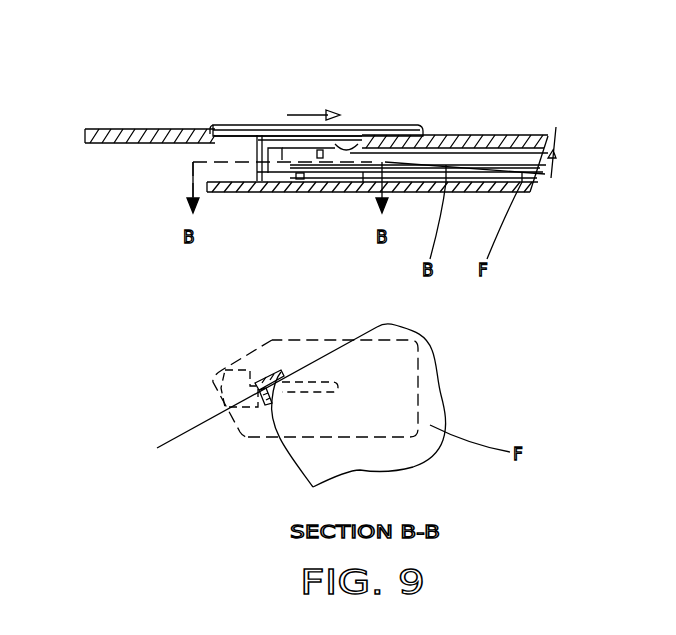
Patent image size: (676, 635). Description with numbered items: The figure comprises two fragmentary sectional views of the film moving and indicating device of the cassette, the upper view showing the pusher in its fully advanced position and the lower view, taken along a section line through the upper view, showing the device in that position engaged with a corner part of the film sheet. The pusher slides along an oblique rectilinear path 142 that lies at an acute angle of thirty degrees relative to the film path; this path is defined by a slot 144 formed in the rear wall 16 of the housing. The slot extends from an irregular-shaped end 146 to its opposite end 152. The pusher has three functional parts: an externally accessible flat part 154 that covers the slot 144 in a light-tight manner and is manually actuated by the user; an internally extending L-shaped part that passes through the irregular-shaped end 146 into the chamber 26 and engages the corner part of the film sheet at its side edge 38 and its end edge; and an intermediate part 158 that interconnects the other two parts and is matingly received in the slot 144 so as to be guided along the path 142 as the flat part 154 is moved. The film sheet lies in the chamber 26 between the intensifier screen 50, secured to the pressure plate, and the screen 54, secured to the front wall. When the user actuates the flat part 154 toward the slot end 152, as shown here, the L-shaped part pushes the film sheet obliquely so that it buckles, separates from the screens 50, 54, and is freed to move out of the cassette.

The rear wall 16 is at (490, 136).
The chamber 26 is at (455, 146).
The side edge 38 is at (309, 341).
The intensifier screen 50 is at (517, 153).
The screen 54 is at (362, 180).
The oblique rectilinear path 142 is at (340, 134).
The slot 144 is at (290, 126).
The irregular-shaped end 146 is at (240, 387).
The slot end 152 is at (354, 141).
The flat part 154 is at (237, 125).
The intermediate part 158 is at (328, 176).